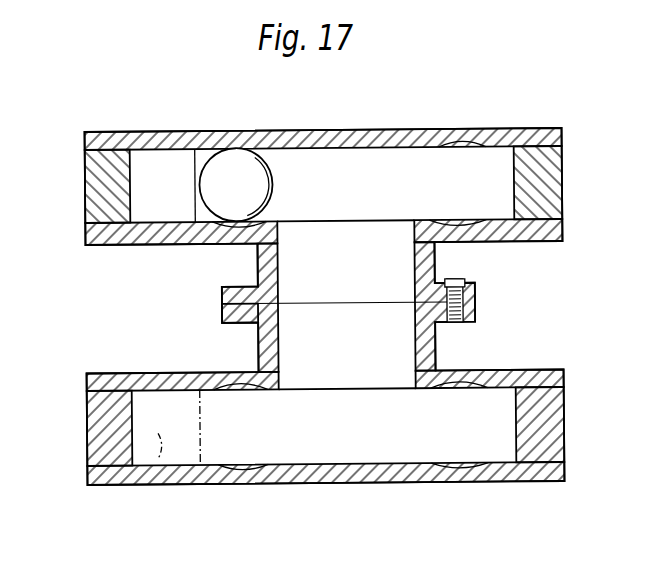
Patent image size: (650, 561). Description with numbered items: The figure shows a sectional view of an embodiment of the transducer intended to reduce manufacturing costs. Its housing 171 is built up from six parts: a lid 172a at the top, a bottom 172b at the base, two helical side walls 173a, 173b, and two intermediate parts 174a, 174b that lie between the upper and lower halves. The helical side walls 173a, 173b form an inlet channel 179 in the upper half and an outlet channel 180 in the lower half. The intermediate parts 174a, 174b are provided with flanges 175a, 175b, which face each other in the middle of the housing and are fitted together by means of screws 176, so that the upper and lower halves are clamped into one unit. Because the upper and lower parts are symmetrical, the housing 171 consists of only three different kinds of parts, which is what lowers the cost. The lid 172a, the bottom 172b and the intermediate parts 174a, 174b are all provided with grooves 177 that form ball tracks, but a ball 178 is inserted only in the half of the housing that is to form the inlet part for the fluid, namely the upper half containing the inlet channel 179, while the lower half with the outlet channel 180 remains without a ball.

The housing 171 is at (465, 119).
The lid 172a is at (127, 133).
The bottom 172b is at (259, 473).
The helical side wall 173a is at (101, 205).
The helical side wall 173b is at (97, 423).
The intermediate part 174a is at (168, 233).
The intermediate part 174b is at (494, 381).
The flange 175a is at (228, 286).
The flange 175b is at (222, 320).
The screw 176 is at (464, 285).
The groove 177 is at (462, 145).
The ball 178 is at (232, 156).
The inlet channel 179 is at (148, 171).
The outlet channel 180 is at (156, 456).